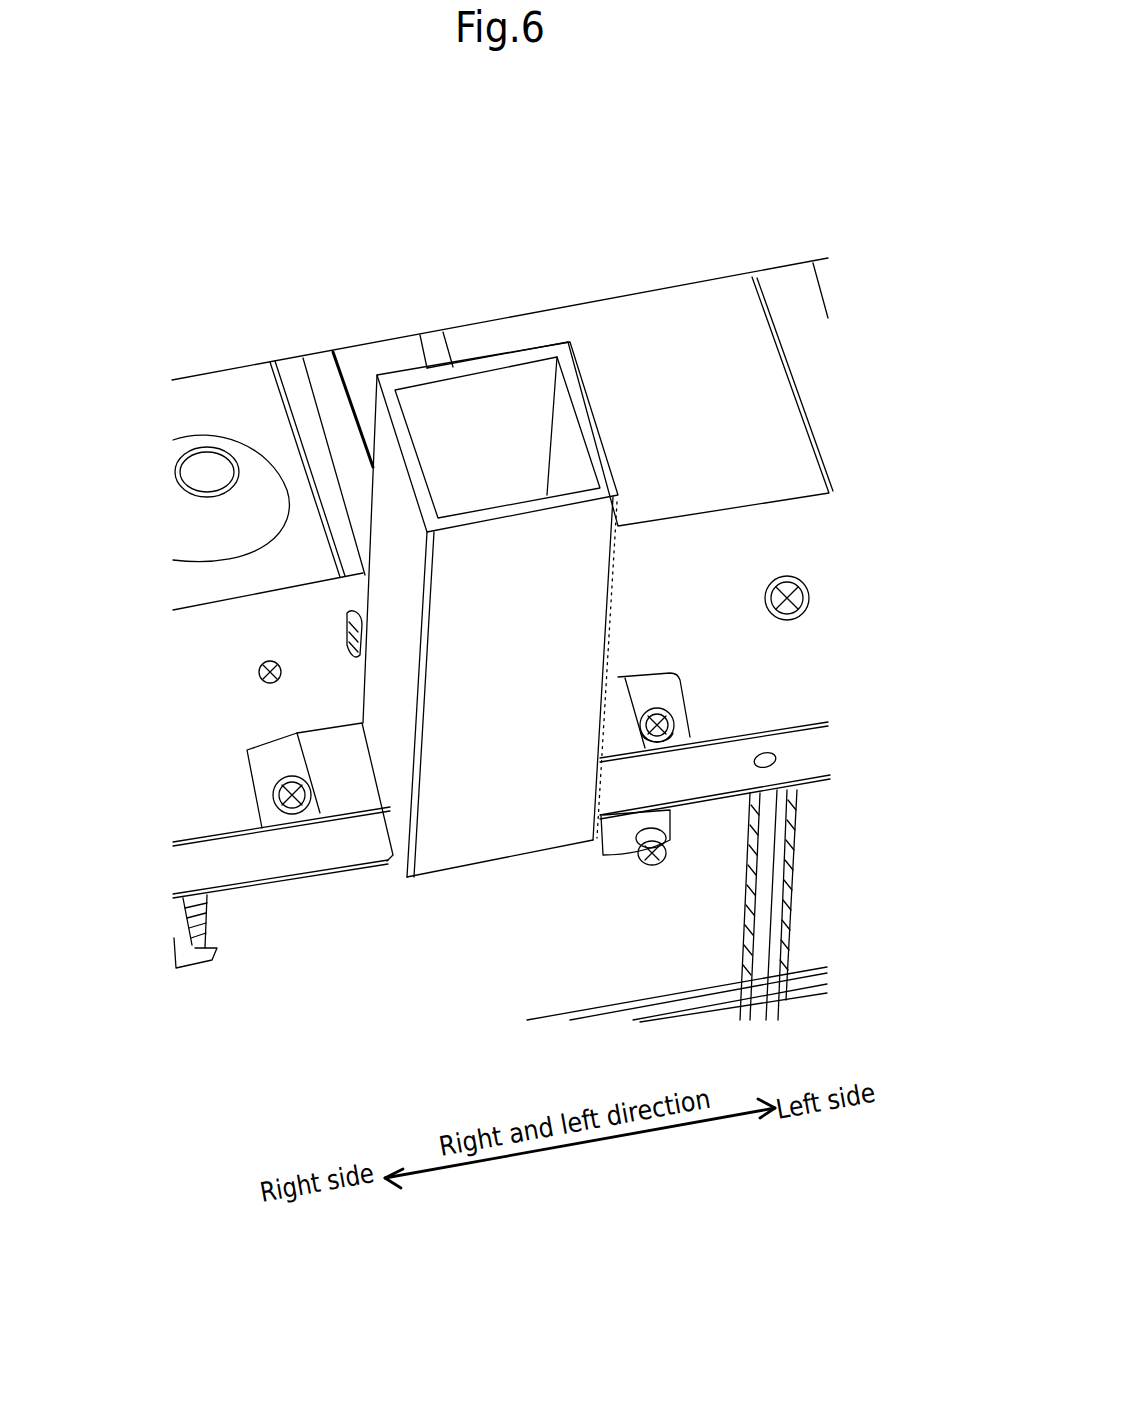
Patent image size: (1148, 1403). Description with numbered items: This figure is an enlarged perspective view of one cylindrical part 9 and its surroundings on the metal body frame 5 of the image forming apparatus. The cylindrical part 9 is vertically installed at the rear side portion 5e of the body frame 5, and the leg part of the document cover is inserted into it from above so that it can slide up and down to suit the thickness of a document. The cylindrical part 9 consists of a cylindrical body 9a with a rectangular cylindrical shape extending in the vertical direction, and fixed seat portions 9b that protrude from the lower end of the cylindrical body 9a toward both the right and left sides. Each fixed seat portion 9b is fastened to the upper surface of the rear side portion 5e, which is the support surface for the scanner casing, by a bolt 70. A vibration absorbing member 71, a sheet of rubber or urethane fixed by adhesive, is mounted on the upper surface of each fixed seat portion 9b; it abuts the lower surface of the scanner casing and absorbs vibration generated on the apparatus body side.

The body frame 5 is at (697, 283).
The rear side portion 5e is at (200, 803).
The cylindrical part 9 is at (473, 783).
The cylindrical body 9a is at (613, 600).
The fixed seat portion 9b is at (270, 815).
The bolt 70 is at (278, 787).
The vibration absorbing member 71 is at (613, 740).